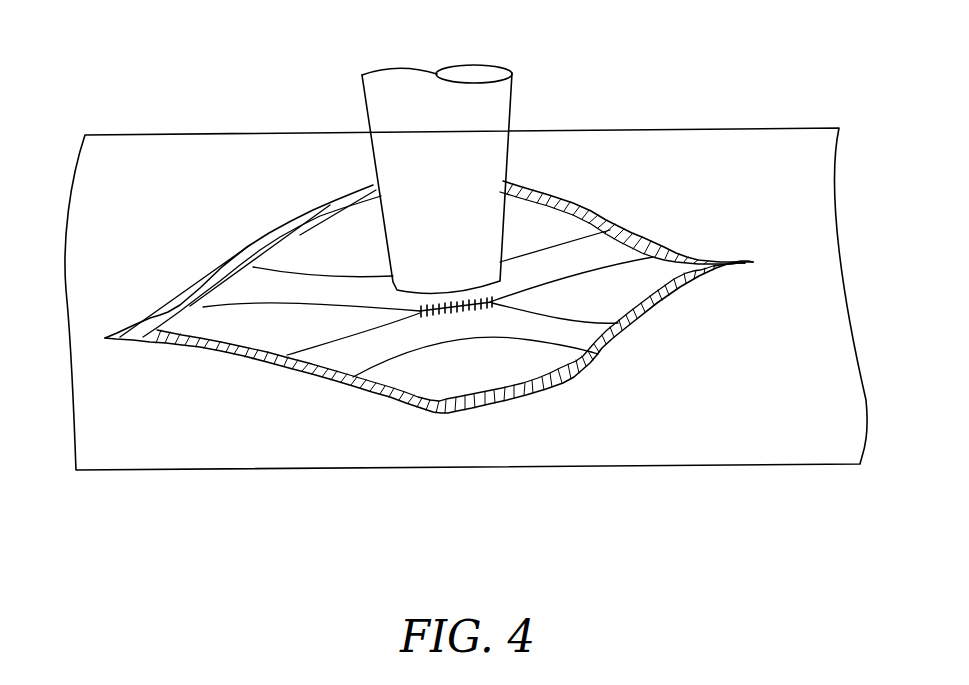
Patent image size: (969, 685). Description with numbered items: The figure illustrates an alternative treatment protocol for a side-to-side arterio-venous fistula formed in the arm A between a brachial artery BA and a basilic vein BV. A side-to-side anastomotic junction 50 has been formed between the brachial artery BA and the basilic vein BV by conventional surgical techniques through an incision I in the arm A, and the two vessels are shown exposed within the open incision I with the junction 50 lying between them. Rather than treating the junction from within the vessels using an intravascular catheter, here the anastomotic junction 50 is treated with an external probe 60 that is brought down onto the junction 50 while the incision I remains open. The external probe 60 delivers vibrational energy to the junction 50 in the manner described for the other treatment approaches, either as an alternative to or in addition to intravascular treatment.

The arm A is at (722, 138).
The incision I is at (540, 385).
The basilic vein BV is at (283, 283).
The brachial artery BA is at (346, 354).
The anastomotic junction 50 is at (452, 317).
The external probe 60 is at (492, 113).